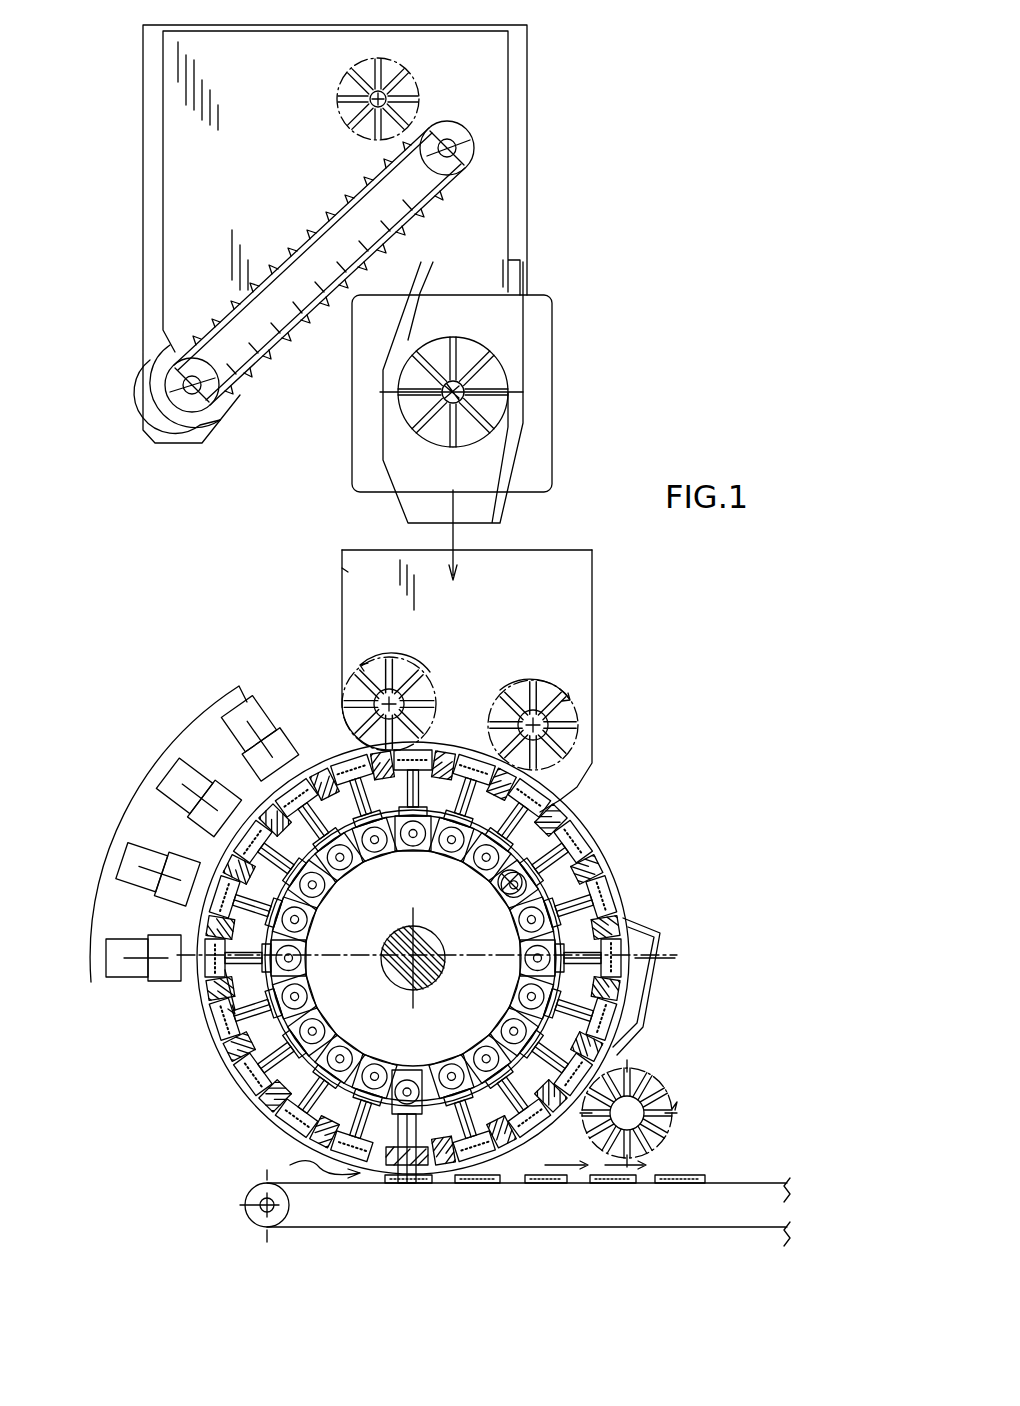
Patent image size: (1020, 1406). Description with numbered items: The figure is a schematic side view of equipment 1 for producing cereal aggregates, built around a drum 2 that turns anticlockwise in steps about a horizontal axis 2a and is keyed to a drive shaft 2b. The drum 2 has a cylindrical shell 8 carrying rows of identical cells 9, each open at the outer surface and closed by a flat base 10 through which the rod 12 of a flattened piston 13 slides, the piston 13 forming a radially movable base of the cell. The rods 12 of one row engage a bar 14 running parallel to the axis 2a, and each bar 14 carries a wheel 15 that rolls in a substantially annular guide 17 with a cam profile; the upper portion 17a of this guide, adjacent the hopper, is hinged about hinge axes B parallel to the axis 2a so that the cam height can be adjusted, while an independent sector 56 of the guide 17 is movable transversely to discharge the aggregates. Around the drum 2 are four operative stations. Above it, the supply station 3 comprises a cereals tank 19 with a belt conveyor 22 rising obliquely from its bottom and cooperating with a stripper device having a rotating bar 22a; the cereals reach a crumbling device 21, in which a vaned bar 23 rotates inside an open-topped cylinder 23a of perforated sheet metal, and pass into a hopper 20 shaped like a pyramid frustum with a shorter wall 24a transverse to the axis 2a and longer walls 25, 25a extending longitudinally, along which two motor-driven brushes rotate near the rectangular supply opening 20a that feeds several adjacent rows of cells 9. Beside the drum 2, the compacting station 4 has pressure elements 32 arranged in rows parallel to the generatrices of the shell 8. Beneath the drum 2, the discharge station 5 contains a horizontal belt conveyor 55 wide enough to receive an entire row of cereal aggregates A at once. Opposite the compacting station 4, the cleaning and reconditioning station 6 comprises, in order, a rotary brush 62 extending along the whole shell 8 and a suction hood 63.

The equipment 1 is at (472, 915).
The drum 2 is at (408, 942).
The horizontal axis 2a is at (427, 985).
The drive shaft 2b is at (427, 958).
The station for supplying cereals 3 is at (474, 681).
The compacting station 4 is at (198, 842).
The discharge station 5 is at (314, 1167).
The cleaning and reconditioning station 6 is at (699, 980).
The cylindrical shell 8 is at (449, 1025).
The cells 9 is at (397, 940).
The flat base 10 is at (428, 1183).
The rod 12 is at (177, 1053).
The piston 13 is at (311, 920).
The bar 14 is at (497, 917).
The wheel 15 is at (433, 949).
The annular guide 17 is at (344, 920).
The upper portion of cam guide 17a is at (413, 958).
The cereals tank 19 is at (513, 78).
The hopper 20 is at (518, 625).
The supply opening 20a is at (580, 795).
The crumbling device 21 is at (406, 364).
The belt conveyor 22 is at (292, 258).
The rotating bar 22a is at (355, 90).
The vaned bar 23 is at (400, 400).
The perforated sheet metal cylinder 23a is at (398, 380).
The shorter wall 24a is at (342, 572).
The longer wall 25 is at (342, 640).
The longer wall 25a is at (592, 700).
The pressure elements 32 is at (204, 826).
The conveyor 55 is at (491, 1177).
The sector of cam guide 56 is at (404, 1092).
The rotary brush 62 is at (643, 1075).
The suction hood 63 is at (660, 932).
The cereal aggregates A is at (395, 1185).
The hinge axes B is at (479, 919).